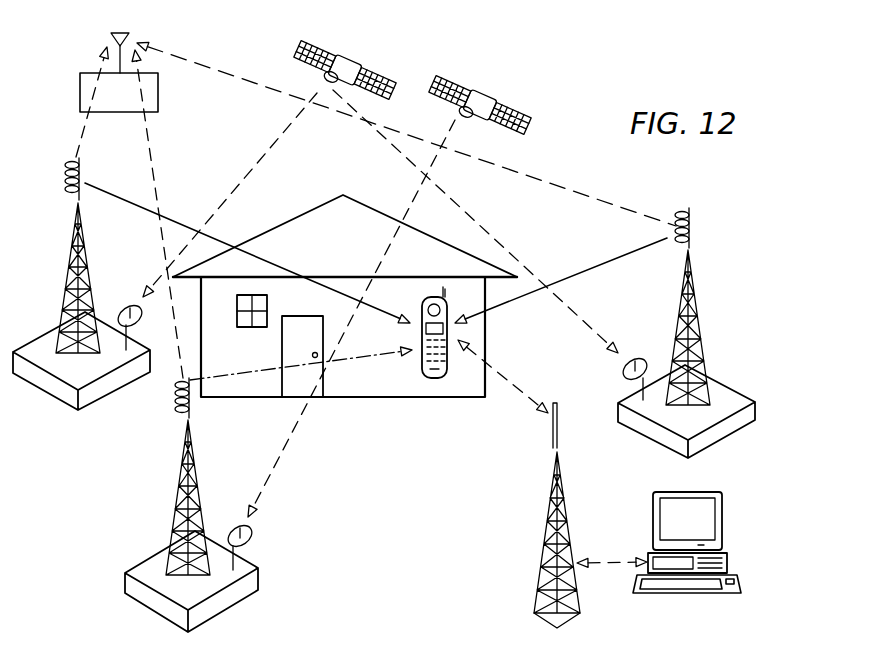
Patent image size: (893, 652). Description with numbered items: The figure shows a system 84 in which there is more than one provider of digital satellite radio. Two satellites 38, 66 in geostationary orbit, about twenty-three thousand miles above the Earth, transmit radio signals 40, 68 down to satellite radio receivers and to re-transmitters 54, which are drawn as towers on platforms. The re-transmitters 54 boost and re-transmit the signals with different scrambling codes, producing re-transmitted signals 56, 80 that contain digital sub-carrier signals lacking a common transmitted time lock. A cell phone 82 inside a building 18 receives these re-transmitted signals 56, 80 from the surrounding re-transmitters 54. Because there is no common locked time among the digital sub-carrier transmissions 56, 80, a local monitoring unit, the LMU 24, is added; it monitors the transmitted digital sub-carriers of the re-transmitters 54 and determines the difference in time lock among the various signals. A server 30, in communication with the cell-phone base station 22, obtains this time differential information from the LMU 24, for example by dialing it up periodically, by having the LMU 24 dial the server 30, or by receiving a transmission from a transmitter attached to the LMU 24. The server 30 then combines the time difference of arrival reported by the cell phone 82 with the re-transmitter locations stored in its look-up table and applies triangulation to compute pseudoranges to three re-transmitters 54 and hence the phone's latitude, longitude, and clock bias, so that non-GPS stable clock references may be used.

The building 18 is at (366, 398).
The cell-phone base station 22 is at (540, 565).
The local monitoring unit (LMU) 24 is at (80, 85).
The server 30 is at (722, 521).
The satellite 38 is at (357, 54).
The radio signal 40 is at (263, 156).
The re-transmitter 54 is at (68, 285).
The re-transmitted signal 56 is at (83, 130).
The satellite 66 is at (498, 92).
The radio signal 68 is at (411, 202).
The re-transmitted signal 80 is at (154, 180).
The cell phone 82 is at (435, 380).
The system 84 is at (105, 459).